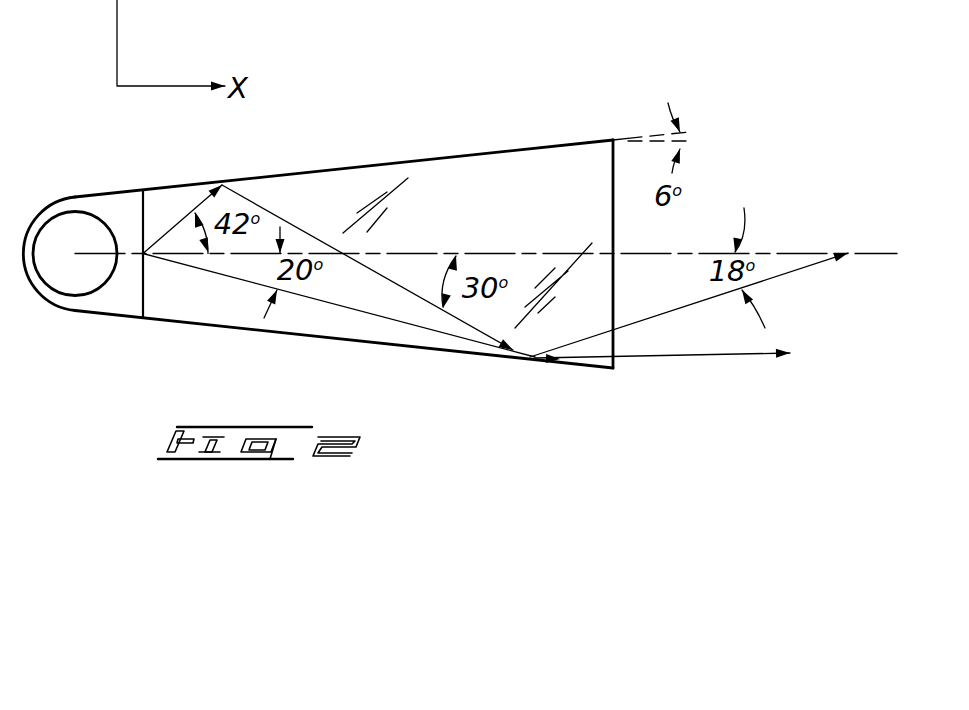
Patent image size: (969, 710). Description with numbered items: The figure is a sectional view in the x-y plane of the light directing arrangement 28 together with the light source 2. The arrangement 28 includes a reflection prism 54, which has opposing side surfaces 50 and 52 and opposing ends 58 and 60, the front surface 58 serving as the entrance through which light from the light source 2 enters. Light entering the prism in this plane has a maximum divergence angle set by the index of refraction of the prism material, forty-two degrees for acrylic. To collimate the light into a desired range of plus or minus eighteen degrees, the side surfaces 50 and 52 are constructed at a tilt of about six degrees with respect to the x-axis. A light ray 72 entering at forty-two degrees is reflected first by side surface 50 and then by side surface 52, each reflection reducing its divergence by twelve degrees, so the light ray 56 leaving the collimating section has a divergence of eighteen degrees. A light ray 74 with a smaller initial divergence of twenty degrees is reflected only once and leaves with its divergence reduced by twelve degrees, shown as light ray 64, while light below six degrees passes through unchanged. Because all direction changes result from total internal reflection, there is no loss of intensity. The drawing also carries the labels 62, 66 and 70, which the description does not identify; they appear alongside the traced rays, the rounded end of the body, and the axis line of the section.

The light source 2 is at (67, 273).
The arrangement 28 is at (530, 55).
The side surface 50 is at (372, 164).
The side surface 52 is at (352, 343).
The reflection prism 54 is at (422, 200).
The light ray 56 is at (785, 274).
The front surface 58 is at (145, 292).
The end 60 is at (610, 180).
The reflected light ray 62 is at (300, 225).
The light ray 64 is at (692, 358).
The rounded end portion 66 is at (88, 314).
The optical axis 70 is at (537, 253).
The light ray 72 is at (178, 221).
The light ray 74 is at (247, 283).